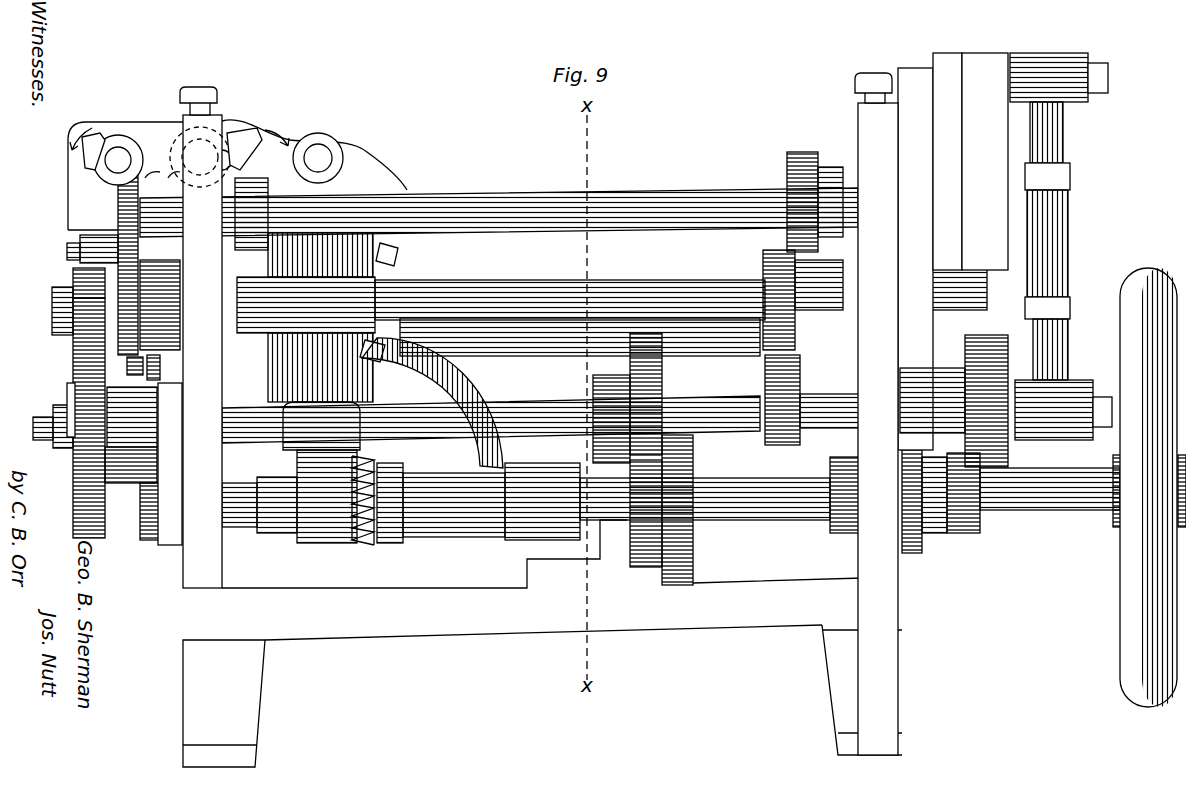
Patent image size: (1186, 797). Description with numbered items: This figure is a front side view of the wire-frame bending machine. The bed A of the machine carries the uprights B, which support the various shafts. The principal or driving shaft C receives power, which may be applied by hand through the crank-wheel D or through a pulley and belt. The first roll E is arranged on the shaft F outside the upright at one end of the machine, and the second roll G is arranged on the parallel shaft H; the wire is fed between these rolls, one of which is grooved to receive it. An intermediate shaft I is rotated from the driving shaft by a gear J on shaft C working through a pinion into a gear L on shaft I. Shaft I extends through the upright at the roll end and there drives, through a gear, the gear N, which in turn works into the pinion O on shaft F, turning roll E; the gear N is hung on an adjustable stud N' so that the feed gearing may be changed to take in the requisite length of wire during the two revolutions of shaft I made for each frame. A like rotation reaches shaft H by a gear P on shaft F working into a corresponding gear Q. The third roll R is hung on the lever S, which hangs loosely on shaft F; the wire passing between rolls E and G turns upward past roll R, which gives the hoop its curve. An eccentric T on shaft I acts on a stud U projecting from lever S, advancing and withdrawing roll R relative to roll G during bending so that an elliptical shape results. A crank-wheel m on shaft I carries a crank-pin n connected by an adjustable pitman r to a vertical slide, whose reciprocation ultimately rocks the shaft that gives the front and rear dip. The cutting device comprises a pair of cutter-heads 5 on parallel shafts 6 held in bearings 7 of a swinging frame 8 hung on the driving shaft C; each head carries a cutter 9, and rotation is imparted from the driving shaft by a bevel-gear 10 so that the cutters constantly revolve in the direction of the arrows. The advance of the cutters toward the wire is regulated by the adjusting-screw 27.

The bed A is at (542, 643).
The uprights B is at (539, 414).
The driving shaft C is at (704, 493).
The crank-wheel D is at (1148, 487).
The first roll E is at (135, 263).
The shaft F is at (52, 318).
The second roll G is at (125, 224).
The shaft H is at (563, 208).
The intermediate shaft I is at (33, 428).
The gear J is at (661, 510).
The gear L is at (652, 394).
The gear N is at (76, 418).
The adjustable stud N' is at (132, 463).
The pinion O is at (78, 279).
The gear P is at (791, 296).
The gear Q is at (804, 202).
The third roll R is at (67, 249).
The lever S is at (180, 373).
The eccentric T is at (75, 383).
The stud U is at (127, 363).
The crank-wheel m is at (954, 390).
The crank-pin n is at (1063, 405).
The adjustable pitman r is at (1059, 216).
The cutter-heads 5 is at (212, 155).
The cutter shafts 6 is at (162, 157).
The bearings 7 is at (164, 165).
The swinging frame 8 is at (321, 472).
The cutter 9 is at (179, 127).
The bevel-gear 10 is at (362, 511).
The adjusting-screw 27 is at (393, 258).